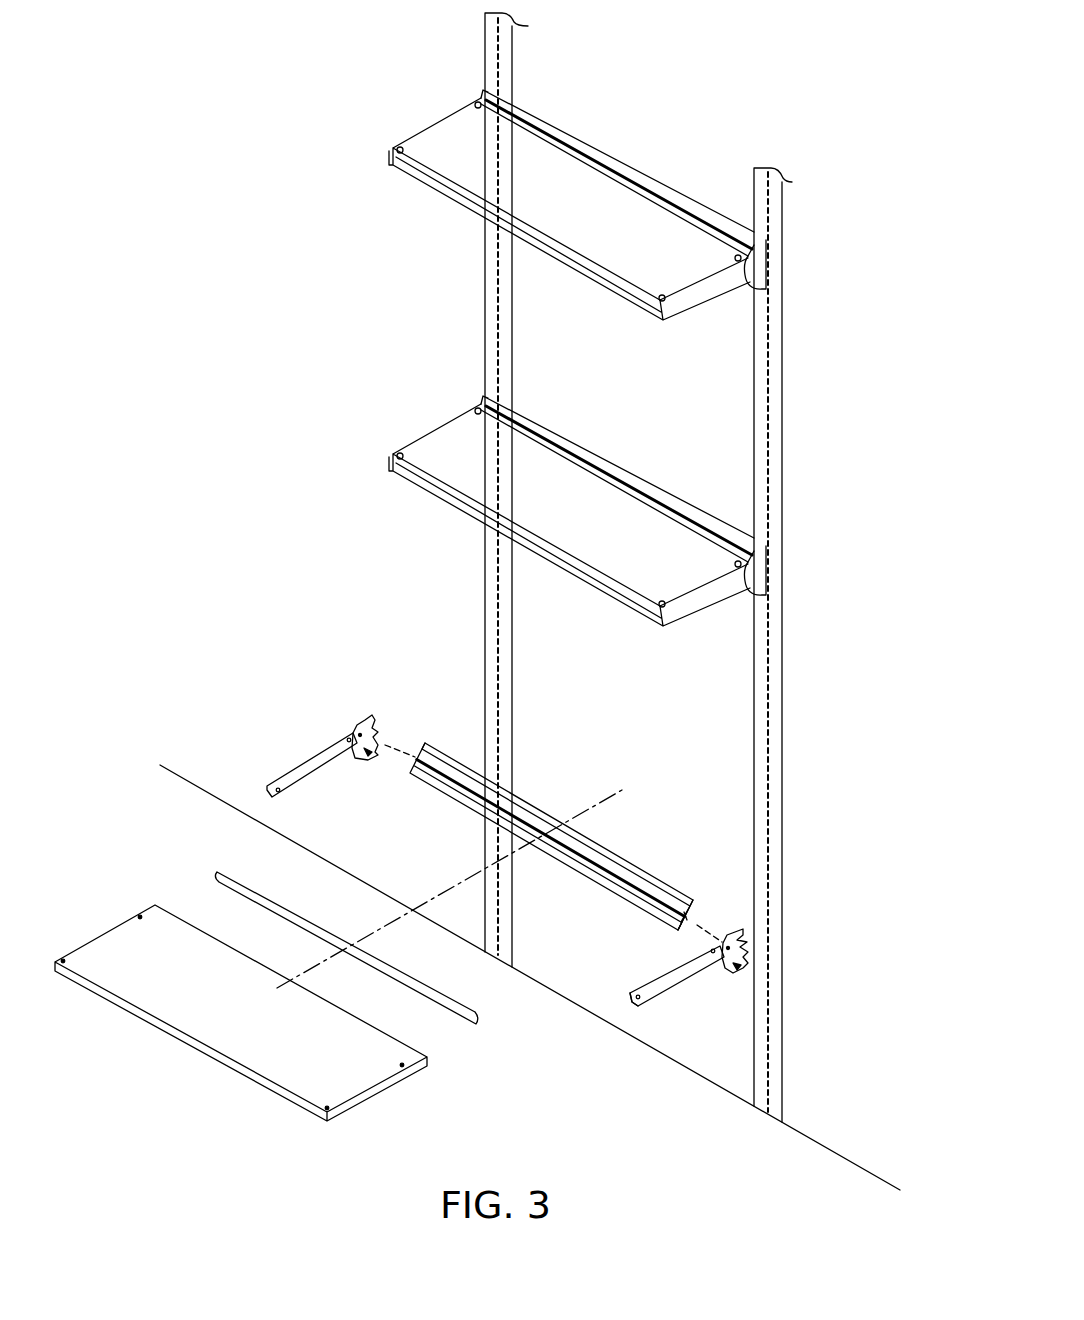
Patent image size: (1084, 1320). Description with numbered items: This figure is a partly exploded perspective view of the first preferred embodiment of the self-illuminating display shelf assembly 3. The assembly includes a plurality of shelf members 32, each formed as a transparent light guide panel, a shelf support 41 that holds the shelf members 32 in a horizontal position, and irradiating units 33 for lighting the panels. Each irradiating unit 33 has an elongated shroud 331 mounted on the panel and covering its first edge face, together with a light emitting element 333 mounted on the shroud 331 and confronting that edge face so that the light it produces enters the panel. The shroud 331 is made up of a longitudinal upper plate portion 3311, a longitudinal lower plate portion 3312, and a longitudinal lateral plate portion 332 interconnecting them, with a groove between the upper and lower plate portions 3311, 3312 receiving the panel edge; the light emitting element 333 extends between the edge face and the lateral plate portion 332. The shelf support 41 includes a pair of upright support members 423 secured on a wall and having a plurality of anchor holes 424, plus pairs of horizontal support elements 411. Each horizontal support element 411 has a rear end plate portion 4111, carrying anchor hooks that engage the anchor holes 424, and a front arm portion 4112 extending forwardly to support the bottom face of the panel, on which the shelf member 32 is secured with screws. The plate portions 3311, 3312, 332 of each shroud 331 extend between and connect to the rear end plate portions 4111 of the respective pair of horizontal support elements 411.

The self-illuminating display shelf assembly 3 is at (420, 111).
The shelf member 32 is at (456, 198).
The irradiating unit 33 is at (602, 132).
The shroud 331 is at (576, 859).
The upper plate portion 3311 is at (664, 888).
The lower plate portion 3312 is at (680, 930).
The lateral plate portion 332 is at (690, 917).
The light emitting element 333 is at (445, 1014).
The shelf support 41 is at (557, 914).
The horizontal support element 411 is at (557, 897).
The rear end plate portion 4111 is at (748, 949).
The front arm portion 4112 is at (645, 1010).
The upright support member 423 is at (490, 633).
The anchor hole 424 is at (768, 368).